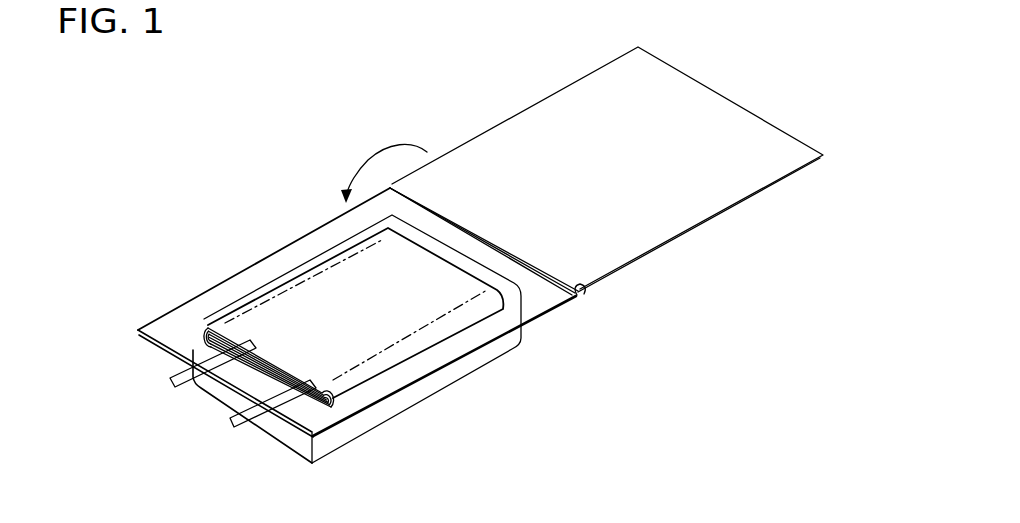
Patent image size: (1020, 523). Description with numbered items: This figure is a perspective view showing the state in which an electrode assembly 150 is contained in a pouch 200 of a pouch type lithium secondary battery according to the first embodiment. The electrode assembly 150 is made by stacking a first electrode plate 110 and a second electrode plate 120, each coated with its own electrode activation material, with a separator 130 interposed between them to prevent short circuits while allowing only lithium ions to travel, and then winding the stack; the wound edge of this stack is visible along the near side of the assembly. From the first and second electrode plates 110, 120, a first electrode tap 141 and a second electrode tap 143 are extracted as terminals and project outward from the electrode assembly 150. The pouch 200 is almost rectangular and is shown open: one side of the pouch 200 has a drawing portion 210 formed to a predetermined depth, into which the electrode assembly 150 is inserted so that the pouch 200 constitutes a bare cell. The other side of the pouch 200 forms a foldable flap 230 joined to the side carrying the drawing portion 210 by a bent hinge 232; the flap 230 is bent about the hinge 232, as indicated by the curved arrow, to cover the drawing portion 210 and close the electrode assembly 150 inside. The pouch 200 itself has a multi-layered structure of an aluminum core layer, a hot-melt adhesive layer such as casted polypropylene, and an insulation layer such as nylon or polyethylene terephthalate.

The first electrode plate 110 is at (207, 347).
The second electrode plate 120 is at (205, 320).
The separator 130 is at (205, 330).
The first electrode tap 141 is at (168, 379).
The second electrode tap 143 is at (229, 417).
The electrode assembly 150 is at (289, 328).
The pouch 200 is at (481, 237).
The drawing portion 210 is at (513, 296).
The foldable flap 230 is at (717, 202).
The bent hinge 232 is at (584, 292).